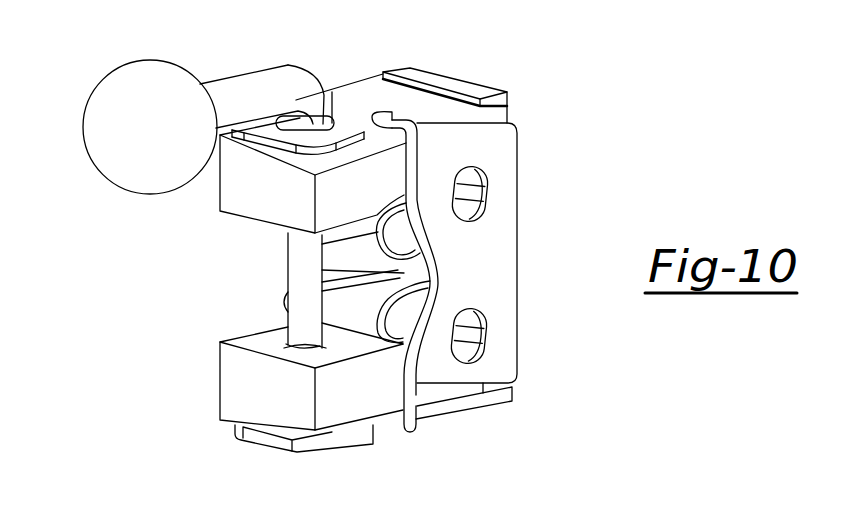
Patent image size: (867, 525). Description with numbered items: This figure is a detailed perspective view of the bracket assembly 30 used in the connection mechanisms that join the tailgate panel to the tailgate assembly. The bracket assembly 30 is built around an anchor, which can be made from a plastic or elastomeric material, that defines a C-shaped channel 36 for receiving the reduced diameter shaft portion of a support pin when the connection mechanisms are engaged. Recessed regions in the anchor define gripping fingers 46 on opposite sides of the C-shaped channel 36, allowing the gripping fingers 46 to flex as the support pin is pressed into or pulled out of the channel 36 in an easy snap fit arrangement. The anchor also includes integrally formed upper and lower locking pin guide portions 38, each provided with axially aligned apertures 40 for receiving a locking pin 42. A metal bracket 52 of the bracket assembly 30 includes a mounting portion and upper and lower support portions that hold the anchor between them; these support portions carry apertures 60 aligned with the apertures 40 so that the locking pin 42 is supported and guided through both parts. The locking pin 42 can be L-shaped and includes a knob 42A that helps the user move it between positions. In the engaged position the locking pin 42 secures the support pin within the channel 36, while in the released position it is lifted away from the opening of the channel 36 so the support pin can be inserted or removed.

The bracket assembly 30 is at (562, 150).
The C-shaped channel 36 is at (403, 293).
The locking pin guide portions 38 is at (245, 187).
The apertures 40 is at (300, 348).
The locking pin 42 is at (310, 258).
The knob 42A is at (140, 90).
The gripping fingers 46 is at (398, 240).
The metal bracket 52 is at (517, 238).
The apertures 60 is at (332, 92).